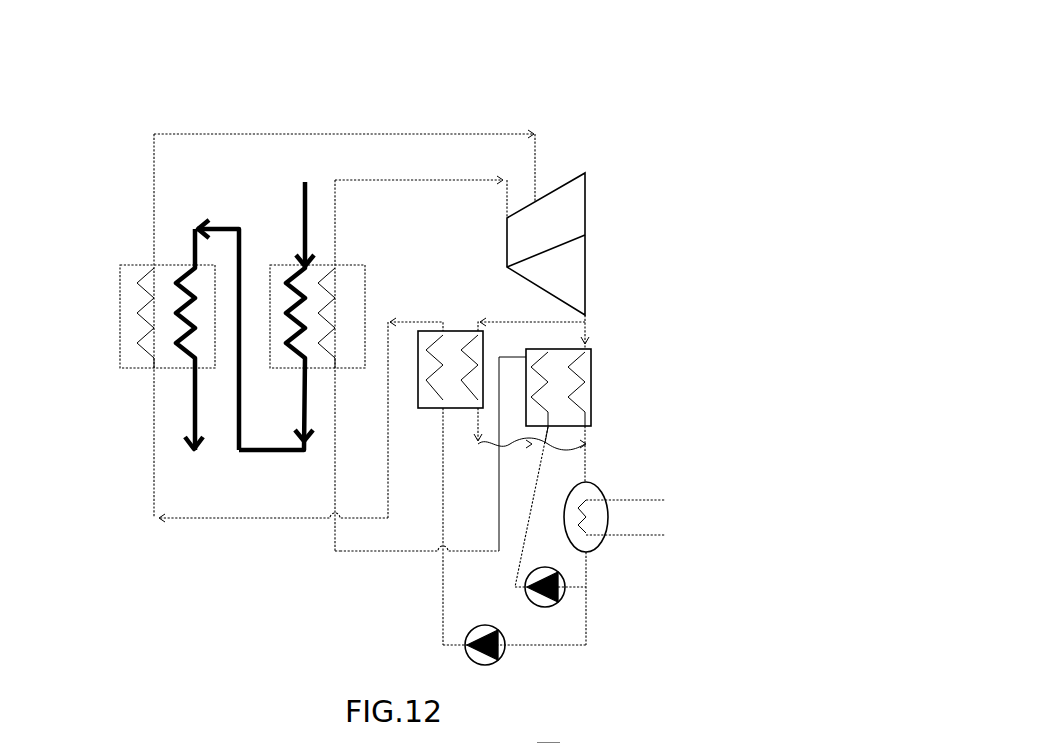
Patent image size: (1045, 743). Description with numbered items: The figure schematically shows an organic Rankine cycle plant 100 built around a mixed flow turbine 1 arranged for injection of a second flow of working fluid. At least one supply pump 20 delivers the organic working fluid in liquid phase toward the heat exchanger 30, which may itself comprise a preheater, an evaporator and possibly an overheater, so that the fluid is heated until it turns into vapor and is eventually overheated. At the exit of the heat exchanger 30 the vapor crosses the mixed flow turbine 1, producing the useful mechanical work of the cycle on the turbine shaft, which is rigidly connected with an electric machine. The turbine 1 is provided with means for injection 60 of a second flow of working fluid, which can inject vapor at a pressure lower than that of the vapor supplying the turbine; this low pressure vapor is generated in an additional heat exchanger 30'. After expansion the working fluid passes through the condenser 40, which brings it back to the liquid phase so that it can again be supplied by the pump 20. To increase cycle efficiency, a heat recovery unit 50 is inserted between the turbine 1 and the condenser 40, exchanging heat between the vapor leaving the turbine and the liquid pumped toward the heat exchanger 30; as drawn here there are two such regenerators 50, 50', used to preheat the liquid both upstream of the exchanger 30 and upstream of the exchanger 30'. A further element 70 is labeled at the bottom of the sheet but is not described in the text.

The organic Rankine cycle plant 100 is at (547, 109).
The means for injection 60 is at (540, 161).
The mixed flow turbine 1 is at (585, 235).
The additional heat exchanger 30' is at (138, 335).
The heat exchanger 30 is at (296, 366).
The regenerator 50' is at (589, 436).
The heat recovery unit 50 is at (658, 431).
The condenser 40 is at (590, 522).
The supply pump 20 is at (577, 546).
The cooling circuit 70 is at (548, 734).